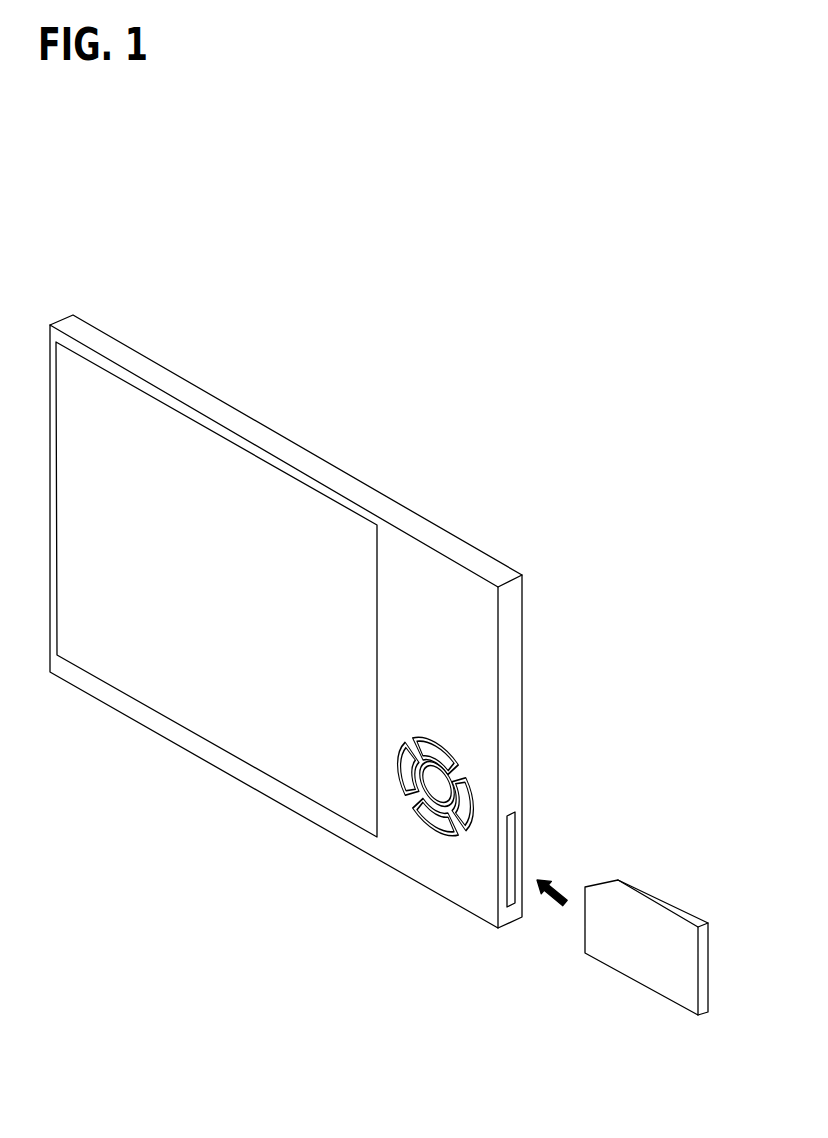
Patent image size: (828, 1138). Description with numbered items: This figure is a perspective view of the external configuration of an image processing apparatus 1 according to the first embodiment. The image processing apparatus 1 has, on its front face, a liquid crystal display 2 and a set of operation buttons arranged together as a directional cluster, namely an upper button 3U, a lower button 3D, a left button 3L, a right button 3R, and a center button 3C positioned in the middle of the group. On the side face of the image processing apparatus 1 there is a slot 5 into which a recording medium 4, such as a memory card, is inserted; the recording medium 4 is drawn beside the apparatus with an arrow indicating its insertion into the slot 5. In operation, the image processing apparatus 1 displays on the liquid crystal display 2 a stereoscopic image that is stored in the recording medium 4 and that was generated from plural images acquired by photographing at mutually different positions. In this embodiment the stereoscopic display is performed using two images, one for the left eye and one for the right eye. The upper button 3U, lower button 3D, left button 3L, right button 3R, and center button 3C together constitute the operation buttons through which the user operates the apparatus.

The image processing apparatus 1 is at (390, 481).
The liquid crystal display (LCD) 2 is at (240, 465).
The upper button 3U is at (428, 741).
The lower button 3D is at (427, 820).
The left button 3L is at (400, 770).
The right button 3R is at (462, 797).
The center button 3C is at (440, 772).
The recording medium 4 is at (653, 890).
The slot 5 is at (515, 858).